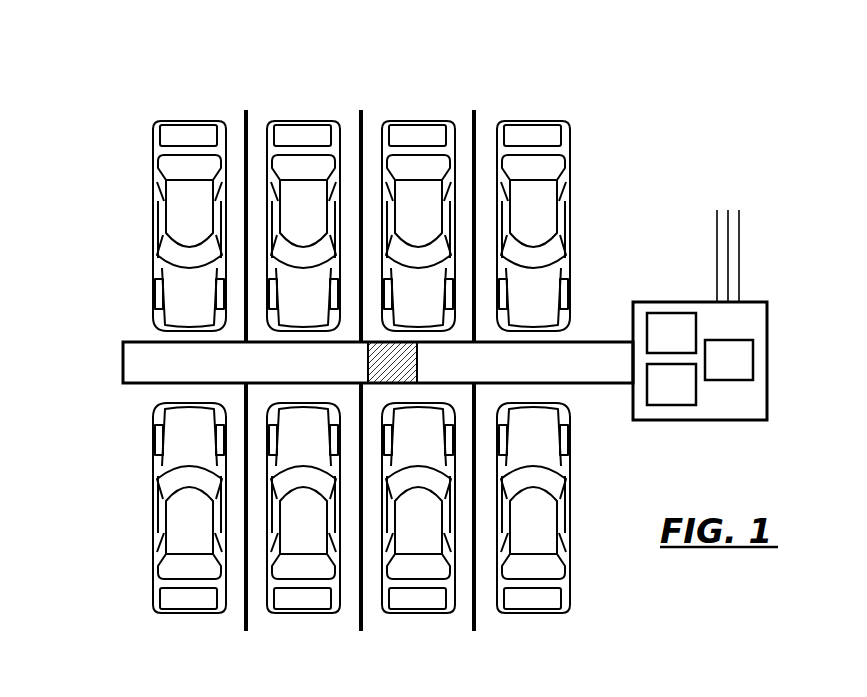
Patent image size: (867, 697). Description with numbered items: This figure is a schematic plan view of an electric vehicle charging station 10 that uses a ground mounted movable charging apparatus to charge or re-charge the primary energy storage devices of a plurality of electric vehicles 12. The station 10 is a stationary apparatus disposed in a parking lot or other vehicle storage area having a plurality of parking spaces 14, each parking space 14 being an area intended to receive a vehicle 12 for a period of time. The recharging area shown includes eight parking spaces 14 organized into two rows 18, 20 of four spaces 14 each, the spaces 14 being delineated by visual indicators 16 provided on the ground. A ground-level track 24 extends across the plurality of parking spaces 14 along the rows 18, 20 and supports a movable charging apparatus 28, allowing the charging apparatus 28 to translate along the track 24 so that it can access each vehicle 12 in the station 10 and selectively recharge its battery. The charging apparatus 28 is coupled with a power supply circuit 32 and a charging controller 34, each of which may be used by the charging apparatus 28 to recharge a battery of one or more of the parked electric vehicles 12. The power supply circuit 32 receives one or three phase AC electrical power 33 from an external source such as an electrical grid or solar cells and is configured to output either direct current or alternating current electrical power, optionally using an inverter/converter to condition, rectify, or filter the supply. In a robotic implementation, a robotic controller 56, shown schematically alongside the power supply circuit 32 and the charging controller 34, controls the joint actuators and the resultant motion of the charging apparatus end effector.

The electric vehicle charging station 10 is at (96, 56).
The electric vehicle 12 is at (200, 223).
The parking space 14 is at (367, 369).
The visual indicator 16 is at (246, 112).
The first row 18 is at (75, 213).
The second row 20 is at (75, 488).
The ground-level track 24 is at (345, 362).
The movable charging apparatus 28 is at (368, 356).
The power supply circuit 32 is at (682, 343).
The AC electrical power 33 is at (750, 227).
The charging controller 34 is at (682, 395).
The robotic controller 56 is at (740, 370).